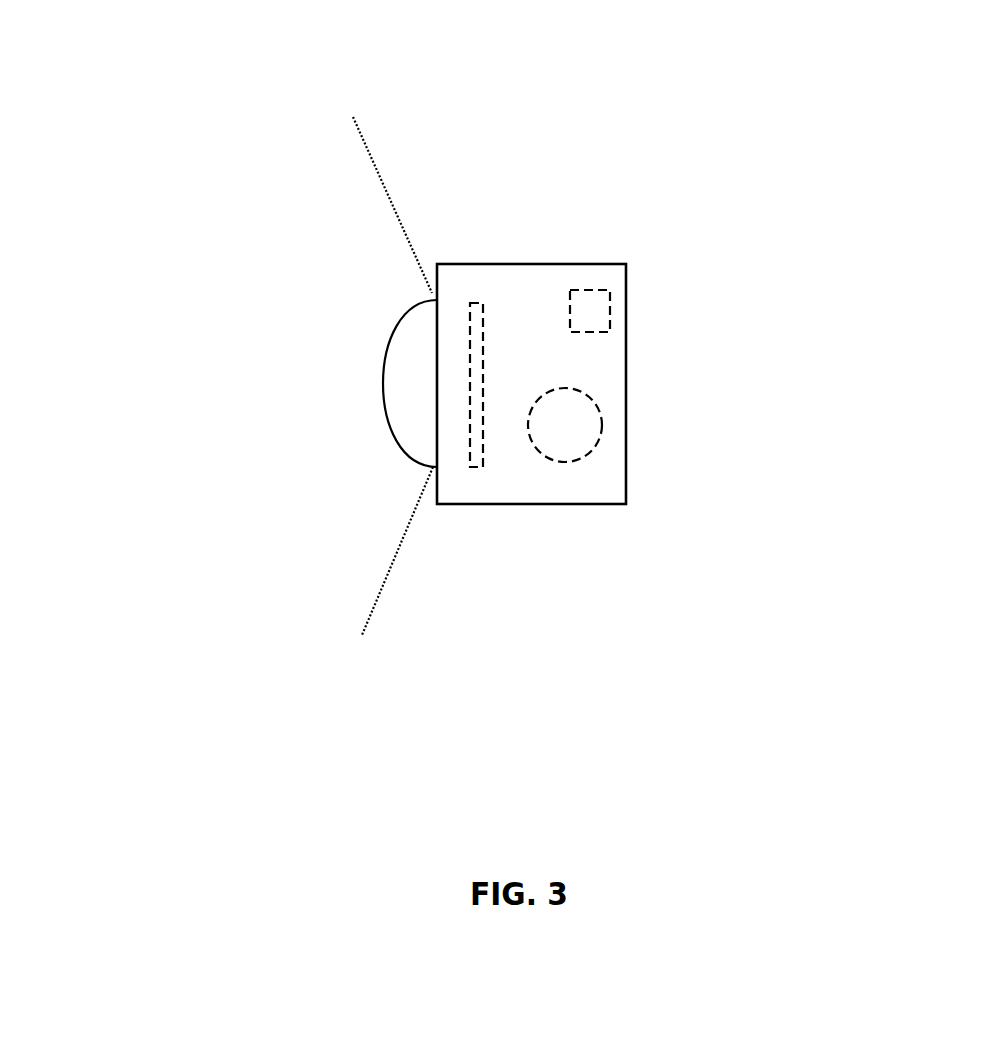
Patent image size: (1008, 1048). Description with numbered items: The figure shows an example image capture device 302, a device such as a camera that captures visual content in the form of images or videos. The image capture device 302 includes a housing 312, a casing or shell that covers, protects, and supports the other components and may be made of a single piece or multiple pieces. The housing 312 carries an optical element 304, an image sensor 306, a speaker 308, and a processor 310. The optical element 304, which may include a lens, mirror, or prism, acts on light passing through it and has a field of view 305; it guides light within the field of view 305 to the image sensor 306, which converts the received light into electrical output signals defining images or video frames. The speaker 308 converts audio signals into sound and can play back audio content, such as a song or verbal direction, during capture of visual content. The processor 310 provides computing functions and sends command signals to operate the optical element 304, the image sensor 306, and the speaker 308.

The image capture device 302 is at (590, 132).
The optical element 304 is at (433, 466).
The field of view 305 is at (405, 252).
The image sensor 306 is at (478, 303).
The speaker 308 is at (610, 300).
The processor 310 is at (602, 427).
The housing 312 is at (542, 505).